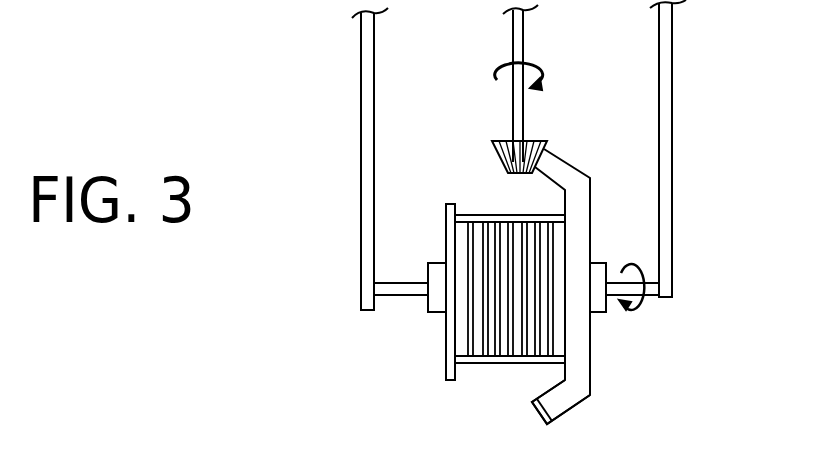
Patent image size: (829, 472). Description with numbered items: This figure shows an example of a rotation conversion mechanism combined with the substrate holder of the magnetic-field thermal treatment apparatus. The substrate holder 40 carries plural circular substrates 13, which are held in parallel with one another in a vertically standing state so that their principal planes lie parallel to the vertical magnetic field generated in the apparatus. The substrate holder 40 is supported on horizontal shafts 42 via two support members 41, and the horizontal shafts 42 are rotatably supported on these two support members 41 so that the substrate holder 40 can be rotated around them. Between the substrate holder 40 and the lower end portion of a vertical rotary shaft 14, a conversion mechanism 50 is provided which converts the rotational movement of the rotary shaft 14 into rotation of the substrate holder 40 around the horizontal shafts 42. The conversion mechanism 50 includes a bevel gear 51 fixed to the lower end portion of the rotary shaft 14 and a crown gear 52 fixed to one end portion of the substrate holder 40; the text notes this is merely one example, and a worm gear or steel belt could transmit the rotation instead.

The circular substrates 13 is at (487, 358).
The rotary shaft 14 is at (523, 40).
The substrate holder 40 is at (443, 338).
The support members 41 is at (361, 71).
The horizontal shafts 42 is at (405, 282).
The conversion mechanism 50 is at (563, 155).
The bevel gear 51 is at (506, 140).
The crown gear 52 is at (578, 382).